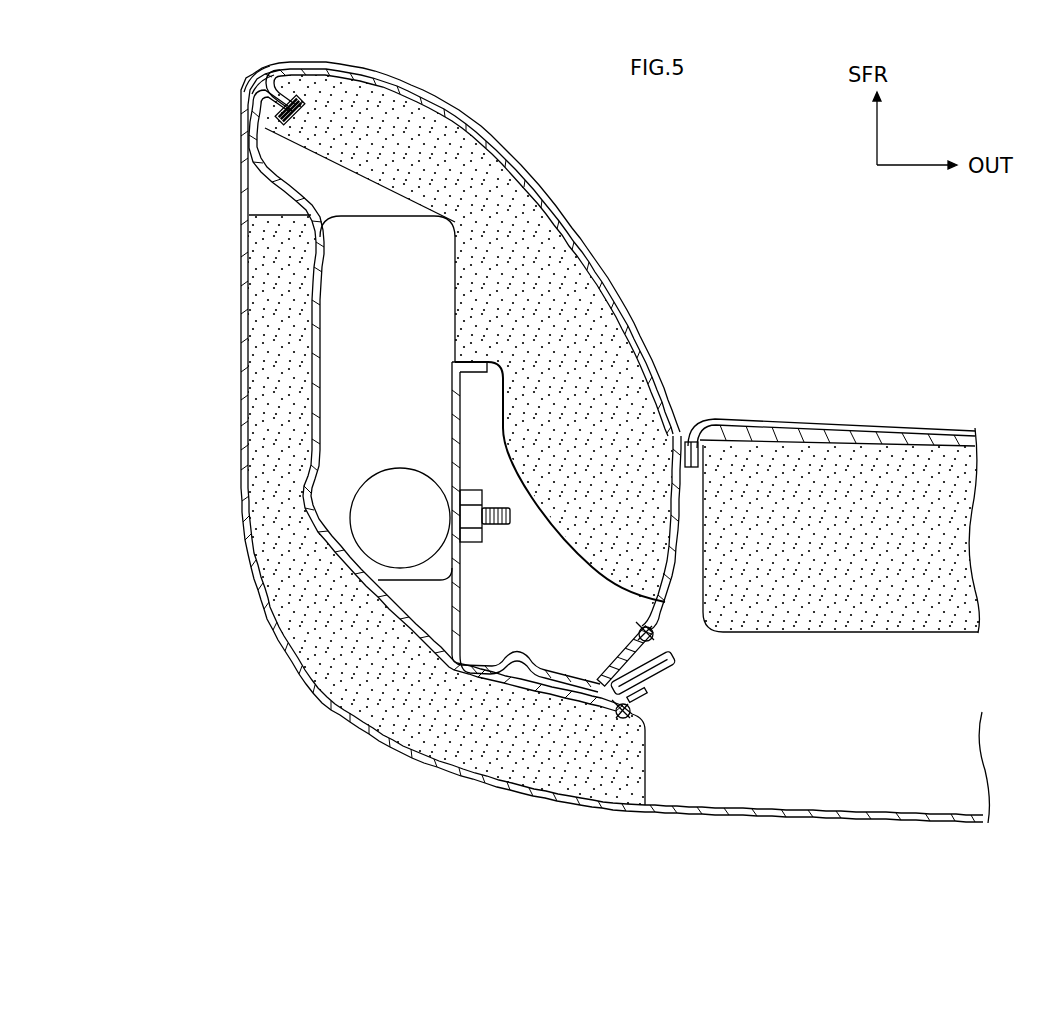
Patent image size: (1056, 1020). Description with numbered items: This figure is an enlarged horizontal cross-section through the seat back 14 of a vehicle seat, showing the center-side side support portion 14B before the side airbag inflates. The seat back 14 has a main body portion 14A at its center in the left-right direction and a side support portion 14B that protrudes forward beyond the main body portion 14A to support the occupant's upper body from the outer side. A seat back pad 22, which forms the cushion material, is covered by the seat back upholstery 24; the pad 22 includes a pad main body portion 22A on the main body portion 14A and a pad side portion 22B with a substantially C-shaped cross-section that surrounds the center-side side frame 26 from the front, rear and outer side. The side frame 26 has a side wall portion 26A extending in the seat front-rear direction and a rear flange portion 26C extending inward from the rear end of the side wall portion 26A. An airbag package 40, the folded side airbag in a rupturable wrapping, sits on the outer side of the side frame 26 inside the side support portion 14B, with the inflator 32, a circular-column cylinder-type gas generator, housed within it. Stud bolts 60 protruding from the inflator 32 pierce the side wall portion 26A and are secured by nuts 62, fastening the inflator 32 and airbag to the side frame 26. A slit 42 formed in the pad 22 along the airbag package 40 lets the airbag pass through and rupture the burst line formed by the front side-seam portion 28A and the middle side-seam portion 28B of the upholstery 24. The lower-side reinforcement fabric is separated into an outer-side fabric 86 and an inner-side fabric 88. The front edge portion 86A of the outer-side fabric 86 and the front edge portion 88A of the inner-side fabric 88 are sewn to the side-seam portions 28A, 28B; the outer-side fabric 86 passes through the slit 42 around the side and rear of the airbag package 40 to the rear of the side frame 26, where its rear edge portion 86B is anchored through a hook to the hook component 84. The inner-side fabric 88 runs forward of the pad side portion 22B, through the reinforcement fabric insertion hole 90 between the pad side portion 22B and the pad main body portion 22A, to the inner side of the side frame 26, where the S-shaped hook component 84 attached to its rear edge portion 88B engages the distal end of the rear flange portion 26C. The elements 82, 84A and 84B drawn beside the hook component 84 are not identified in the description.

The seat back 14 is at (797, 183).
The main body portion 14A is at (912, 421).
The side support portion 14B is at (571, 215).
The seat back pad 22 is at (810, 636).
The pad main body portion 22A is at (910, 612).
The pad side portion 22B is at (272, 383).
The seat back upholstery 24 is at (244, 303).
The side frame 26 is at (484, 594).
The side wall portion 26A is at (456, 428).
The rear flange portion 26C is at (515, 678).
The front side-seam portion 28A is at (249, 68).
The middle side-seam portion 28B is at (460, 383).
The inflator 32 is at (385, 470).
The airbag package 40 is at (379, 219).
The slit 42 is at (280, 216).
The stud bolt 60 is at (510, 516).
The nut 62 is at (473, 490).
The clip 82 is at (676, 666).
The hook component 84 is at (617, 659).
The bracket plate 84A is at (612, 655).
The bracket end 84B is at (650, 697).
The outer-side fabric 86 is at (386, 469).
The front edge portion 86A is at (262, 110).
The rear edge portion 86B is at (620, 718).
The inner-side fabric 88 is at (614, 285).
The front edge portion 88A is at (300, 92).
The rear edge portion 88B is at (662, 640).
The reinforcement fabric insertion hole 90 is at (700, 500).